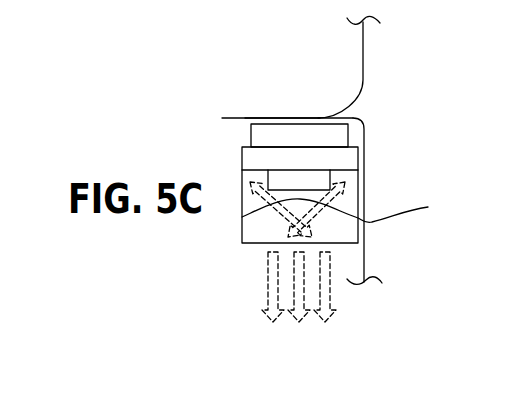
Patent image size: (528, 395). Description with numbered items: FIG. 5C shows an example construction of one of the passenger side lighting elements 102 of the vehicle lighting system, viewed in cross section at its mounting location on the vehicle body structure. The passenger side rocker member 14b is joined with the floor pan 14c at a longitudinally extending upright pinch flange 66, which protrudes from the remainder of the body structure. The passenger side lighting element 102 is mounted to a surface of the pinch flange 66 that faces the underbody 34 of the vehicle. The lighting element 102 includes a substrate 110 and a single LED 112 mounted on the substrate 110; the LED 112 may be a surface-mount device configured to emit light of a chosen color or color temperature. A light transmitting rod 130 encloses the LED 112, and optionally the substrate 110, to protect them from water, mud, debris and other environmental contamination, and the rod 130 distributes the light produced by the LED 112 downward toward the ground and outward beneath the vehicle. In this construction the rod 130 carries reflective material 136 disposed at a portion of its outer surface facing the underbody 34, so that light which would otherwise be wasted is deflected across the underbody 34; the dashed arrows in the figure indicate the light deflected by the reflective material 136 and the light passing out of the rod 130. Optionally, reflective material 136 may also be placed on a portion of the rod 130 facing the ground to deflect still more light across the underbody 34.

The passenger side rocker member 14b is at (363, 80).
The floor pan 14c is at (364, 142).
The passenger side lighting element 102 is at (265, 118).
The pinch flange 66 is at (282, 118).
The substrate 110 is at (252, 133).
The LED 112 is at (243, 188).
The reflective material 136 is at (362, 199).
The light transmitting rod 130 is at (242, 237).
The underbody 34 is at (377, 260).